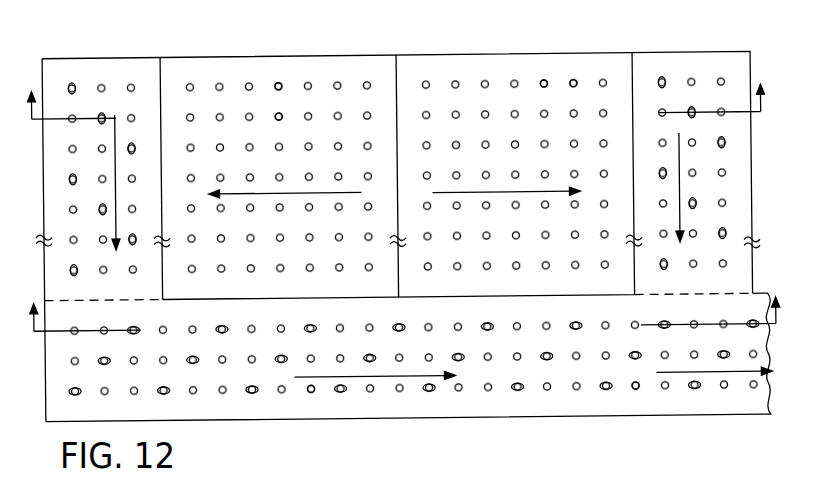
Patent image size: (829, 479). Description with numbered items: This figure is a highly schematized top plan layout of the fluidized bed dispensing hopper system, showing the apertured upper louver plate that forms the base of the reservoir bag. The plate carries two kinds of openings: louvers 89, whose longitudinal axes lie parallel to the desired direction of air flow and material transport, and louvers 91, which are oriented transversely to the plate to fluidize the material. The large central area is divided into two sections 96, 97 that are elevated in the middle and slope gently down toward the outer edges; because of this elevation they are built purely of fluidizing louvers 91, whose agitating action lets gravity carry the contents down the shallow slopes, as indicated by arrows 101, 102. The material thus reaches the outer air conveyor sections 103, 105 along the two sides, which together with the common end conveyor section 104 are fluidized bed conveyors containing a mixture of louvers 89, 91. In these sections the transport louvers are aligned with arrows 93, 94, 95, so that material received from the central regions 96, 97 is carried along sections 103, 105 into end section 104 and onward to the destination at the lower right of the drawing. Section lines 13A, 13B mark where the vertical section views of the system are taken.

The section line 13A is at (393, 119).
The section line 13B is at (401, 329).
The louvers 89 is at (251, 392).
The louvers 91 is at (281, 111).
The arrow 93 is at (117, 167).
The arrow 94 is at (383, 375).
The arrow 95 is at (677, 164).
The central fluidized bed section 96 is at (477, 58).
The central fluidized bed section 97 is at (378, 58).
The arrow 101 is at (289, 191).
The arrow 102 is at (532, 191).
The outer air conveyor section 103 is at (118, 59).
The end conveyor section 104 is at (561, 410).
The outer air conveyor section 105 is at (694, 65).